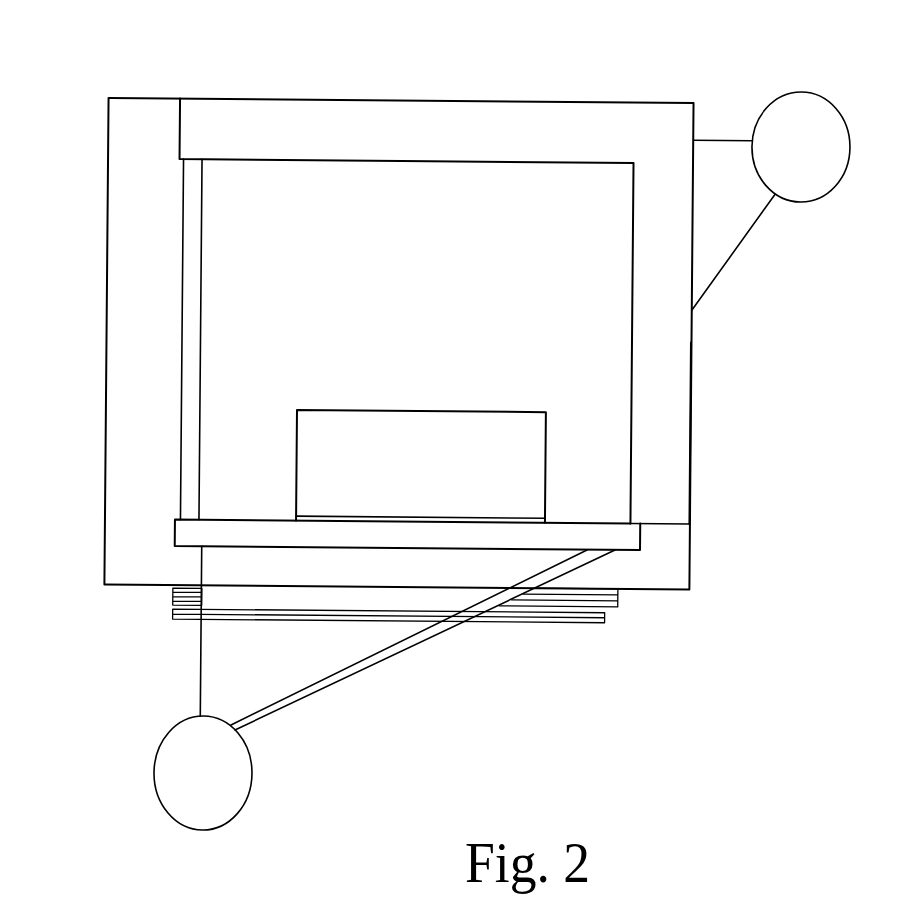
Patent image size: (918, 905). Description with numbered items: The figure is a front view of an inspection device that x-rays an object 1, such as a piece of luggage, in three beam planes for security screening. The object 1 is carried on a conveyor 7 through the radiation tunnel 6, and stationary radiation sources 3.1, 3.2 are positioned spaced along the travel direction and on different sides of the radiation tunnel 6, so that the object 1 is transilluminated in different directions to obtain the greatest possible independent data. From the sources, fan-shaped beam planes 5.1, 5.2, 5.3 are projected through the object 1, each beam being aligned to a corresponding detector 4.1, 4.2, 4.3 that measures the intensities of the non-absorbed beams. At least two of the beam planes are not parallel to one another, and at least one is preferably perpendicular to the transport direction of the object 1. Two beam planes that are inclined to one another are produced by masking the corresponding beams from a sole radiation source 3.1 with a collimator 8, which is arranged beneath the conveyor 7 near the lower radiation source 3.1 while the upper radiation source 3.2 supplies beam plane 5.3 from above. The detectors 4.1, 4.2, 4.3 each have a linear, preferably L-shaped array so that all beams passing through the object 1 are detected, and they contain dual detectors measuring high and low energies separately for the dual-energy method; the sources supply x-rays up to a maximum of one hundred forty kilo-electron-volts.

The object 1 is at (421, 466).
The radiation source 3.1 is at (244, 794).
The radiation source 3.2 is at (808, 168).
The detector 4.1 is at (681, 443).
The detector 4.2 is at (692, 394).
The detector 4.3 is at (126, 453).
The beam plane 5.1 is at (311, 673).
The beam plane 5.2 is at (460, 622).
The beam plane 5.3 is at (721, 227).
The radiation tunnel 6 is at (610, 68).
The conveyor 7 is at (614, 540).
The collimator 8 is at (175, 597).